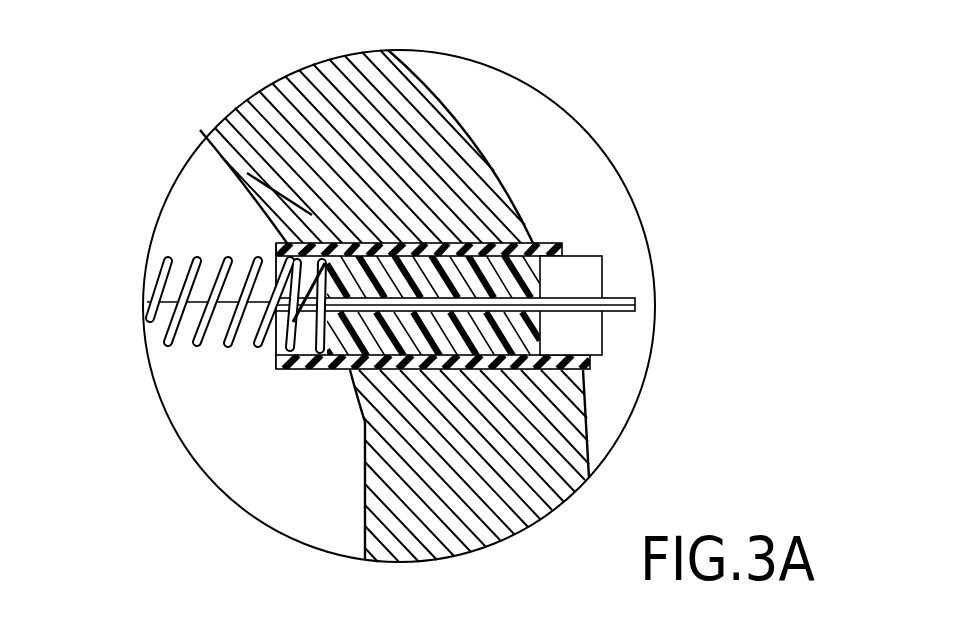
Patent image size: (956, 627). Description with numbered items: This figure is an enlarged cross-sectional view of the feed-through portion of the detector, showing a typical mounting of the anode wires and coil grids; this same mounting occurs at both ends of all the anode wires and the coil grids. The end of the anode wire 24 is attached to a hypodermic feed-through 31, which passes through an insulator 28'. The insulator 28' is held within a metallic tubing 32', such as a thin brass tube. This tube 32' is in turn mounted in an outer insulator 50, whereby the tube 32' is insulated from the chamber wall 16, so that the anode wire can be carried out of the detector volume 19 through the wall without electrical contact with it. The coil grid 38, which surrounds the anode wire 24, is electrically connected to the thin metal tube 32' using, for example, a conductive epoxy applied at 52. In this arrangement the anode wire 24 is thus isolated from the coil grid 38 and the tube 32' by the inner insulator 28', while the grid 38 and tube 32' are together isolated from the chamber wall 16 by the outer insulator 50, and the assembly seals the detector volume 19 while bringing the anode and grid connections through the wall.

The chamber wall 16 is at (363, 455).
The detector volume 19 is at (295, 432).
The anode wire 24 is at (208, 266).
The insulator 28' is at (496, 305).
The hypodermic feed-through 31 is at (580, 297).
The metallic tubing 32' is at (470, 270).
The coil grid 38 is at (167, 278).
The outer insulator 50 is at (455, 372).
The conductive epoxy 52 is at (275, 198).